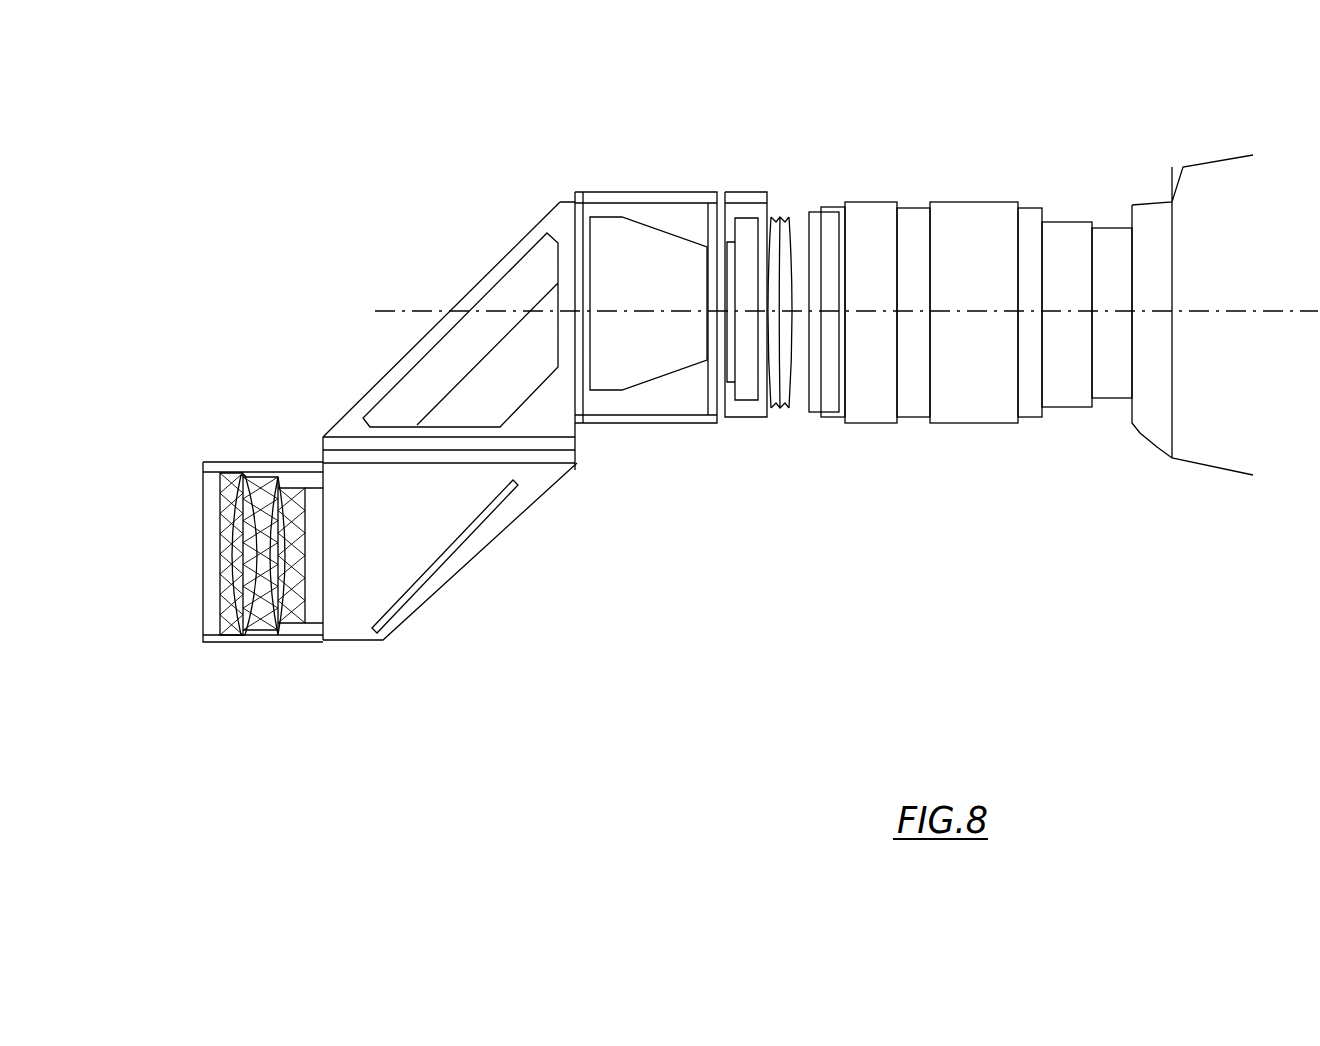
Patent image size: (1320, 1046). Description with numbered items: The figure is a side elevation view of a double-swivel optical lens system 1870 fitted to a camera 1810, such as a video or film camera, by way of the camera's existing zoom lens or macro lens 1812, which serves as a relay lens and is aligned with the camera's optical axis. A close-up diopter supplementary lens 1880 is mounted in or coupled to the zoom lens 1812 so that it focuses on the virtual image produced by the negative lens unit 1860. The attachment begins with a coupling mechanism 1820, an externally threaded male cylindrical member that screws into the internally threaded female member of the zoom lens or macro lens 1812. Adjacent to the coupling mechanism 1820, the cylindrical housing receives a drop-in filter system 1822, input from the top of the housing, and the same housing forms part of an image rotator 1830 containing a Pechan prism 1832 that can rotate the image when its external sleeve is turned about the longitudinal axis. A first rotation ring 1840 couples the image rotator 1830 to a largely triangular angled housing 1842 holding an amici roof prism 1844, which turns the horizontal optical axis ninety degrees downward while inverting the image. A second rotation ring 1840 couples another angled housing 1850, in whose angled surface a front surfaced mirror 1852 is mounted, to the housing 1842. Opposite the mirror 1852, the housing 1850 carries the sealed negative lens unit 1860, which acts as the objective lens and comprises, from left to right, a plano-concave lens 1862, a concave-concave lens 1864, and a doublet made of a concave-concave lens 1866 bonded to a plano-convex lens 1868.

The camera 1810 is at (1253, 485).
The zoom lens or macro lens 1812 is at (1132, 433).
The coupling mechanism 1820 is at (785, 412).
The drop-in filter system 1822 is at (745, 192).
The image rotator 1830 is at (695, 192).
The Pechan prism 1832 is at (647, 353).
The rotation mechanism 1840 is at (580, 427).
The angled housing 1842 is at (520, 250).
The amici roof prism 1844 is at (435, 368).
The angled housing 1850 is at (383, 557).
The front surfaced mirror 1852 is at (482, 512).
The negative lens unit 1860 is at (277, 448).
The plano-concave lens 1862 is at (230, 618).
The concave-concave lens 1864 is at (257, 615).
The concave-concave lens 1866 is at (305, 620).
The plano-convex lens 1868 is at (302, 563).
The double-swivel optical lens system 1870 is at (788, 415).
The diopter supplementary lens 1880 is at (810, 420).